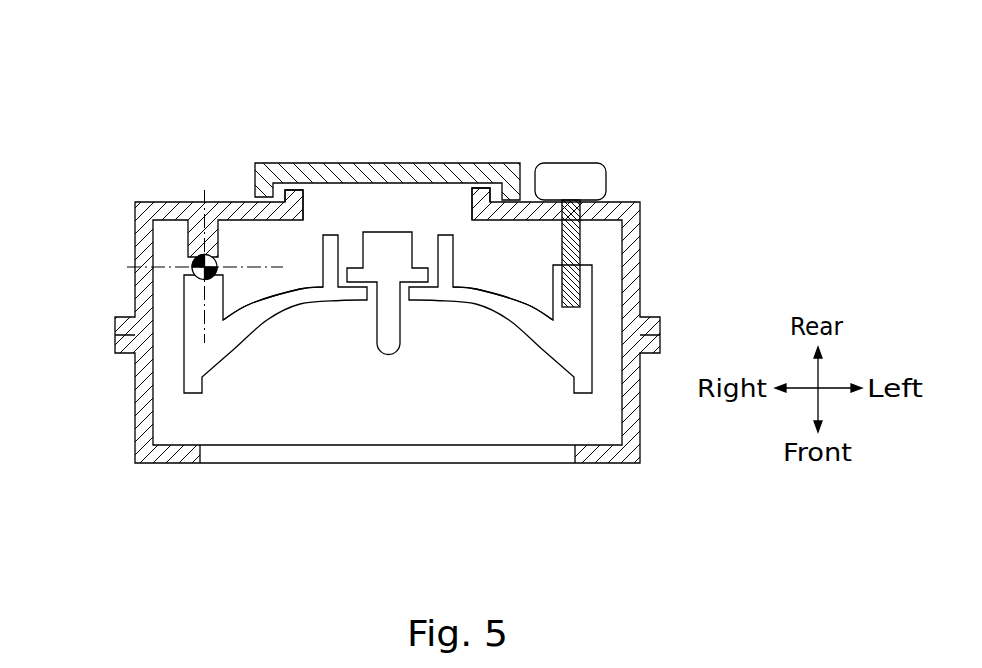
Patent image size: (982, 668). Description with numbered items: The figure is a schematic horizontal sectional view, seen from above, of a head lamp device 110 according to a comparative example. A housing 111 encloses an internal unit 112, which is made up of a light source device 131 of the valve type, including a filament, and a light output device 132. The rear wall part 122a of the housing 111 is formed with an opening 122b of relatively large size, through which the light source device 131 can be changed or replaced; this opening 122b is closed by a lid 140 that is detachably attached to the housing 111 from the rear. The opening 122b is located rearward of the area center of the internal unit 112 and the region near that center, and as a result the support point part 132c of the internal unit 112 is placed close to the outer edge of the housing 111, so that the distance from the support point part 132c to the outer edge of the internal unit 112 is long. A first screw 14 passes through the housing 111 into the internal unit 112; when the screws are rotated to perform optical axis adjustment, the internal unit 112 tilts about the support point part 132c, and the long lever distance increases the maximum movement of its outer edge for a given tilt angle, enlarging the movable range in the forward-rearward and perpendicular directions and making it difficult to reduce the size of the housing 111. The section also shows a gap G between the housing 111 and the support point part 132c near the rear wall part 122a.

The head lamp device 110 is at (113, 148).
The housing 111 is at (640, 235).
The internal unit 112 is at (267, 333).
The rear wall part 122a is at (180, 202).
The opening 122b is at (470, 205).
The first screw 14 is at (568, 163).
The lid 140 is at (360, 163).
The light source device 131 is at (388, 347).
The light output device 132 is at (558, 353).
The support point part 132c is at (192, 268).
The gap G is at (218, 252).